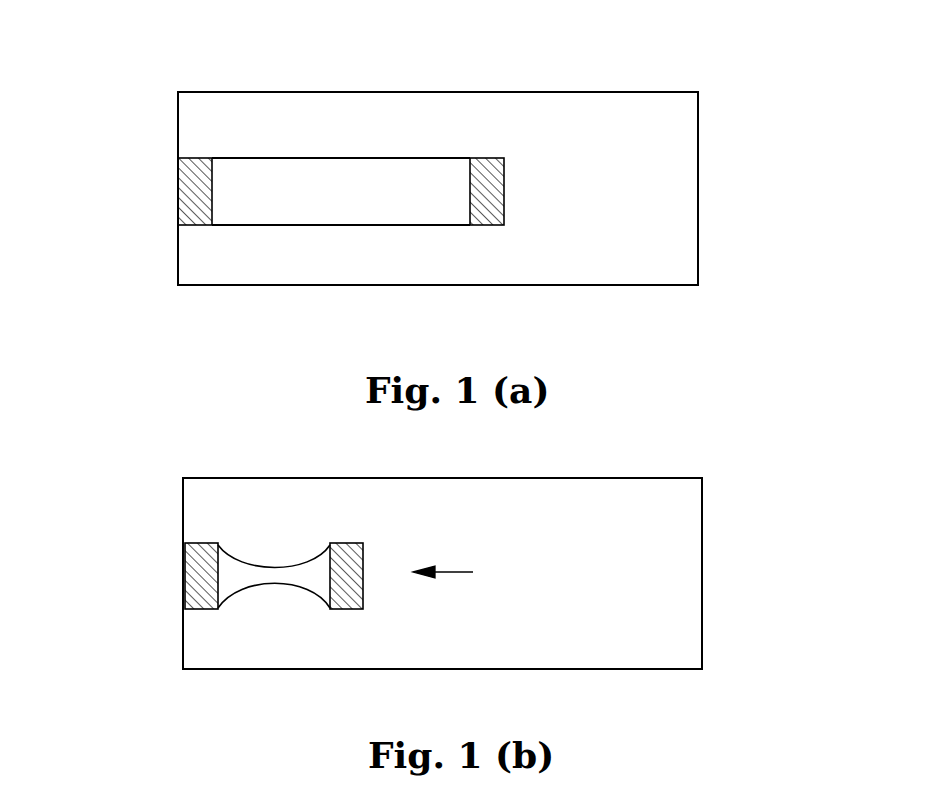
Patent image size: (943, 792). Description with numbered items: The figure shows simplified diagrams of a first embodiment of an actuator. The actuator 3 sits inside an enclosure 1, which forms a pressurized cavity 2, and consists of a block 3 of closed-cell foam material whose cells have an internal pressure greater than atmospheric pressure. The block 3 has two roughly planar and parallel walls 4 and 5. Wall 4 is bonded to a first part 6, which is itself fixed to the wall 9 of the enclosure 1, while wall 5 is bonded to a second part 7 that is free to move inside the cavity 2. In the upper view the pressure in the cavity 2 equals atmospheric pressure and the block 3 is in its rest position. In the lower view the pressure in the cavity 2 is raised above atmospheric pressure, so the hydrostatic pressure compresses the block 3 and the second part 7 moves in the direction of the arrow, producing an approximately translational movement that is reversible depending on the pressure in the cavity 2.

In FIG. 1A, the enclosure 1 is at (647, 90).
In FIG. 1A, the pressurized cavity 2 is at (665, 156).
In FIG. 1B, the pressurized cavity 2 is at (667, 572).
In FIG. 1A, the block of closed-cell foam material 3 is at (347, 187).
In FIG. 1B, the block of closed-cell foam material 3 is at (247, 575).
In FIG. 1A, the wall 4 is at (212, 198).
In FIG. 1A, the wall 5 is at (440, 188).
In FIG. 1A, the first part 6 is at (188, 185).
In FIG. 1B, the first part 6 is at (200, 582).
In FIG. 1A, the second part 7 is at (493, 165).
In FIG. 1B, the second part 7 is at (345, 590).
In FIG. 1A, the wall of the enclosure 9 is at (176, 250).
In FIG. 1B, the wall of the enclosure 9 is at (183, 625).